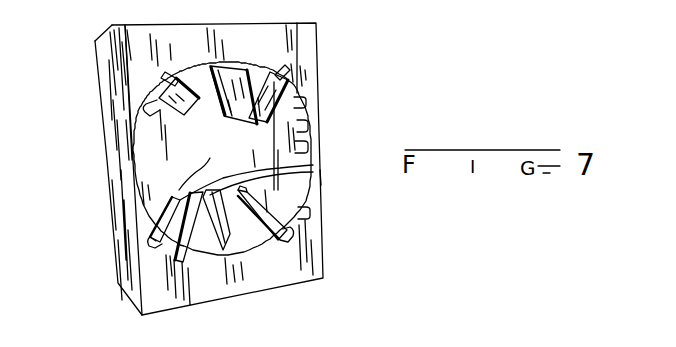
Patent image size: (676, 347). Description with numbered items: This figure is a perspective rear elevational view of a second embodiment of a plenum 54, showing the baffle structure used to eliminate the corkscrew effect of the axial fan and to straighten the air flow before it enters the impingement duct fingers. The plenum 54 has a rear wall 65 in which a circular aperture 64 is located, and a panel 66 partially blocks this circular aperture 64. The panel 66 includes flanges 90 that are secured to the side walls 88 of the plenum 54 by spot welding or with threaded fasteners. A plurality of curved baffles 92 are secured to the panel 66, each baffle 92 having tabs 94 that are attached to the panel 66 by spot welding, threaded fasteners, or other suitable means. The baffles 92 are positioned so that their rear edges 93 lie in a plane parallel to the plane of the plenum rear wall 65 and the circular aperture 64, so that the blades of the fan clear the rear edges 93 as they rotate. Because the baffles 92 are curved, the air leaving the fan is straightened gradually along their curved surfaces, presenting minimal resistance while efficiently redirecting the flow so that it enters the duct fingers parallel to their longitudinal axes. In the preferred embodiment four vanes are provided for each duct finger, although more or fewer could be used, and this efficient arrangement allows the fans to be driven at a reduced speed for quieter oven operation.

The plenum 54 is at (105, 50).
The plenum rear wall 65 is at (297, 40).
The panel 66 is at (152, 137).
The circular aperture 64 is at (305, 130).
The flange 90 is at (275, 111).
The side wall 88 is at (297, 152).
The tab 94 is at (313, 165).
The rear edge 93 is at (240, 118).
The baffle 92 is at (201, 86).